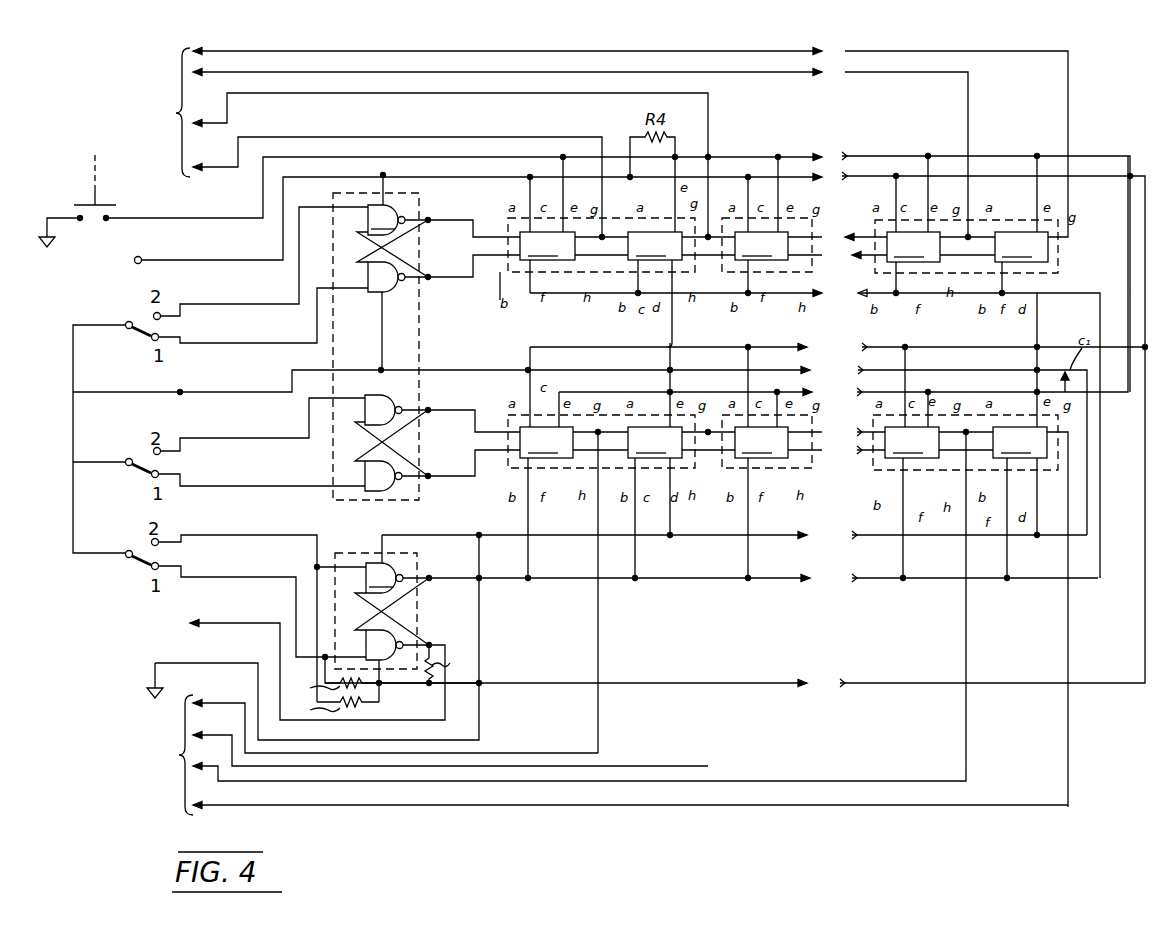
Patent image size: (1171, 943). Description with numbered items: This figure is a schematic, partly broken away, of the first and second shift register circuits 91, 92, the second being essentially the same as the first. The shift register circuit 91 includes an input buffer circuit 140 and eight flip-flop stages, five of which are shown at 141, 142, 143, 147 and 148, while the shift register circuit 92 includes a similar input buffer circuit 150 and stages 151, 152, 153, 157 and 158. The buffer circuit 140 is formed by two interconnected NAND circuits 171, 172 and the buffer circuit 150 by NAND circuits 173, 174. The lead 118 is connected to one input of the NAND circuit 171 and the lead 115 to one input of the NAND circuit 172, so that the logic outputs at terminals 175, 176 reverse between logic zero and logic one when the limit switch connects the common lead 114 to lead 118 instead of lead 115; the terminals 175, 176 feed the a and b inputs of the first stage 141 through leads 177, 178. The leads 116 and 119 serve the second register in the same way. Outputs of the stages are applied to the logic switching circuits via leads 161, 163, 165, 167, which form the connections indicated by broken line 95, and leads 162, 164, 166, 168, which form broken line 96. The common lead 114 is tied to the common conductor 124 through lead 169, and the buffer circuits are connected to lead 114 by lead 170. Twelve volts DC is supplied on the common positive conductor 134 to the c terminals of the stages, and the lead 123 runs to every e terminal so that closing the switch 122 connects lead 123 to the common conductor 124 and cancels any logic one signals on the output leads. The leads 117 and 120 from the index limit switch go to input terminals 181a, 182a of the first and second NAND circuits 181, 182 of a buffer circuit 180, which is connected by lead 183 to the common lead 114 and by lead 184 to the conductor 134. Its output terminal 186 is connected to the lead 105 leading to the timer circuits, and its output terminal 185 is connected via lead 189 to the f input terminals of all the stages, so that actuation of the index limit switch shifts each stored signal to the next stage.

The first shift register circuit 91 is at (1062, 250).
The second shift register circuit 92 is at (1062, 448).
The broken line 95 is at (164, 112).
The broken line 96 is at (166, 755).
The lead 105 is at (244, 623).
The common lead 114 is at (136, 391).
The lead 115 is at (236, 344).
The lead 116 is at (244, 478).
The lead 117 is at (244, 576).
The lead 118 is at (232, 304).
The lead 119 is at (240, 430).
The lead 120 is at (244, 536).
The switch 122 is at (92, 185).
The lead 123 is at (234, 216).
The common conductor 124 is at (52, 250).
The common positive conductor 134 is at (234, 258).
The input buffer circuit 140 is at (400, 272).
The first stage 141 is at (547, 246).
The second stage 142 is at (655, 246).
The flip-flop stage 143 is at (761, 246).
The flip-flop stage 147 is at (913, 247).
The flip-flop stage 148 is at (1021, 247).
The input buffer circuit 150 is at (405, 398).
The flip-flop stage 151 is at (546, 442).
The flip-flop stage 152 is at (655, 442).
The flip-flop stage 153 is at (761, 442).
The flip-flop stage 157 is at (912, 442).
The flip-flop stage 158 is at (1020, 442).
The lead 161 is at (296, 128).
The lead 162 is at (244, 708).
The lead 163 is at (238, 96).
The lead 164 is at (228, 738).
The lead 165 is at (282, 70).
The lead 166 is at (226, 768).
The lead 167 is at (200, 56).
The lead 168 is at (264, 806).
The lead 169 is at (480, 648).
The lead 170 is at (392, 330).
The NAND circuit 171 is at (386, 220).
The NAND circuit 172 is at (361, 322).
The NAND circuit 173 is at (380, 418).
The NAND circuit 174 is at (390, 492).
The output terminal 175 is at (439, 222).
The output terminal 176 is at (431, 292).
The lead 177 is at (517, 207).
The lead 178 is at (509, 274).
The buffer circuit 180 is at (396, 618).
The first NAND circuit 181 is at (360, 564).
The input terminal 181a is at (344, 564).
The second NAND circuit 182 is at (398, 646).
The input terminal 182a is at (350, 657).
The lead 183 is at (435, 536).
The lead 184 is at (387, 690).
The output terminal 185 is at (433, 583).
The output terminal 186 is at (410, 632).
The lead 189 is at (658, 586).